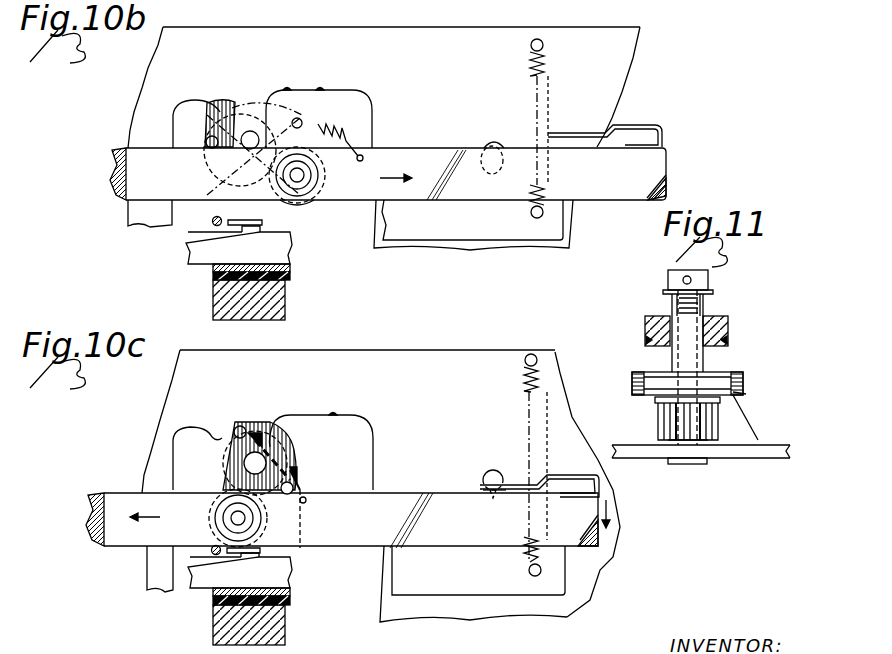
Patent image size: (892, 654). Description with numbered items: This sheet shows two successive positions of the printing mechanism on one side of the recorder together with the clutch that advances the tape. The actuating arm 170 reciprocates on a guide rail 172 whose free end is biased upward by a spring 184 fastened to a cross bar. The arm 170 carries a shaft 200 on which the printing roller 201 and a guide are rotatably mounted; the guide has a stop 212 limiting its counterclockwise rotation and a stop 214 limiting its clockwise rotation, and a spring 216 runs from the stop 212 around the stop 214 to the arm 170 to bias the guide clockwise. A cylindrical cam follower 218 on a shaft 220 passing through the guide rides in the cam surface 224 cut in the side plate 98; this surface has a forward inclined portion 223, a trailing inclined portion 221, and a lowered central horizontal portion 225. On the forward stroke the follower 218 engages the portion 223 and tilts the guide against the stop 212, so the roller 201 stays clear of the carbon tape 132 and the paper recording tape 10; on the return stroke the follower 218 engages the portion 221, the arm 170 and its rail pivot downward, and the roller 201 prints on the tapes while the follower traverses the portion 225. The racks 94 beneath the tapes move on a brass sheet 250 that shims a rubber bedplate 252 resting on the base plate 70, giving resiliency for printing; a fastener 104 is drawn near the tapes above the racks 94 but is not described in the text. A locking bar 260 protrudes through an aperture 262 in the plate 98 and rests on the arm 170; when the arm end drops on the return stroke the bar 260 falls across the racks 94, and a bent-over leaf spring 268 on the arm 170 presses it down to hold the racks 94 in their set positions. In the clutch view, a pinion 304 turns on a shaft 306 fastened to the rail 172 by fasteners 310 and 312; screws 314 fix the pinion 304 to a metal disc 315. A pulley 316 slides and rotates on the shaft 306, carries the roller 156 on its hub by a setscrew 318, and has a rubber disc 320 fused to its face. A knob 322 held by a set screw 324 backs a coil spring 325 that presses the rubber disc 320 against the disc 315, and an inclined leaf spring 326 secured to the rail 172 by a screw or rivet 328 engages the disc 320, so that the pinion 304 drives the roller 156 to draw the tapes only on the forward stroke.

In FIG. 10B, the paper recording tape 10 is at (262, 224).
In FIG. 10C, the paper recording tape 10 is at (262, 551).
In FIG. 10B, the base plate 70 is at (286, 297).
In FIG. 10C, the base plate 70 is at (286, 634).
In FIG. 10B, the racks 94 is at (275, 245).
In FIG. 10C, the racks 94 is at (275, 578).
In FIG. 10B, the plate 98 is at (400, 44).
In FIG. 10C, the plate 98 is at (397, 366).
In FIG. 10B, the fastening screw 104 is at (212, 222).
In FIG. 10C, the fastening screw 104 is at (212, 552).
In FIG. 10B, the carbon tape 132 is at (238, 220).
In FIG. 10C, the carbon tape 132 is at (258, 548).
In FIG. 11, the roller 156 is at (718, 318).
In FIG. 10B, the actuating arm 170 is at (664, 162).
In FIG. 10C, the actuating arm 170 is at (412, 503).
In FIG. 10B, the guide rail 172 is at (555, 228).
In FIG. 10C, the guide rail 172 is at (444, 585).
In FIG. 10B, the spring 184 is at (548, 62).
In FIG. 10C, the spring 184 is at (522, 384).
In FIG. 10C, the shaft 200 is at (236, 517).
In FIG. 10B, the printing roller 201 is at (323, 183).
In FIG. 10C, the printing roller 201 is at (211, 522).
In FIG. 10B, the stop 212 is at (207, 140).
In FIG. 10C, the stop 212 is at (246, 428).
In FIG. 10B, the stop 214 is at (303, 124).
In FIG. 10C, the stop 214 is at (294, 487).
In FIG. 10B, the spring 216 is at (346, 140).
In FIG. 10C, the spring 216 is at (297, 478).
In FIG. 10B, the cam follower 218 is at (240, 180).
In FIG. 10C, the cam follower 218 is at (234, 483).
In FIG. 10B, the shaft 220 is at (230, 153).
In FIG. 10C, the shaft 220 is at (247, 462).
In FIG. 10B, the surface portion 221 is at (296, 92).
In FIG. 10C, the surface portion 221 is at (288, 428).
In FIG. 10B, the surface portion 223 is at (207, 107).
In FIG. 10C, the surface portion 223 is at (222, 415).
In FIG. 10B, the cam surface 224 is at (330, 90).
In FIG. 10C, the cam surface 224 is at (322, 416).
In FIG. 10C, the central horizontal portion 225 is at (218, 428).
In FIG. 10B, the brass sheet 250 is at (290, 268).
In FIG. 10C, the brass sheet 250 is at (290, 594).
In FIG. 10B, the rubber bedplate 252 is at (290, 276).
In FIG. 10C, the rubber bedplate 252 is at (290, 602).
In FIG. 10B, the locking bar 260 is at (486, 147).
In FIG. 10C, the locking bar 260 is at (480, 494).
In FIG. 10B, the aperture 262 is at (497, 146).
In FIG. 10C, the aperture 262 is at (492, 470).
In FIG. 10B, the leaf spring 268 is at (662, 130).
In FIG. 10C, the leaf spring 268 is at (525, 482).
In FIG. 11, the pinion 304 is at (660, 430).
In FIG. 11, the shaft 306 is at (705, 357).
In FIG. 11, the fastener 310 is at (672, 440).
In FIG. 11, the fastener 312 is at (672, 465).
In FIG. 11, the screws 314 is at (668, 418).
In FIG. 11, the metal disc 315 is at (655, 400).
In FIG. 11, the pulley 316 is at (652, 385).
In FIG. 11, the setscrew 318 is at (730, 328).
In FIG. 11, the rubber disc 320 is at (747, 393).
In FIG. 11, the knob 322 is at (710, 281).
In FIG. 11, the set screw 324 is at (672, 280).
In FIG. 11, the coil spring 325 is at (677, 302).
In FIG. 11, the leaf spring 326 is at (750, 412).
In FIG. 11, the screw or rivet 328 is at (767, 458).